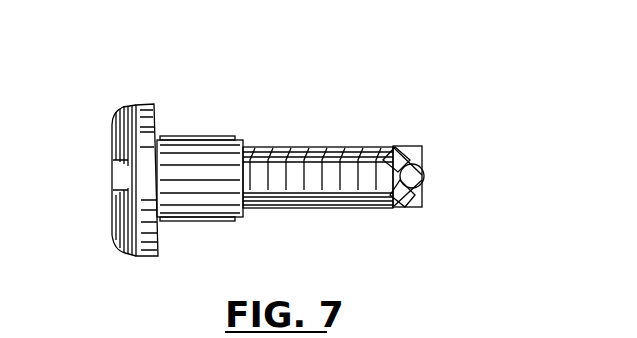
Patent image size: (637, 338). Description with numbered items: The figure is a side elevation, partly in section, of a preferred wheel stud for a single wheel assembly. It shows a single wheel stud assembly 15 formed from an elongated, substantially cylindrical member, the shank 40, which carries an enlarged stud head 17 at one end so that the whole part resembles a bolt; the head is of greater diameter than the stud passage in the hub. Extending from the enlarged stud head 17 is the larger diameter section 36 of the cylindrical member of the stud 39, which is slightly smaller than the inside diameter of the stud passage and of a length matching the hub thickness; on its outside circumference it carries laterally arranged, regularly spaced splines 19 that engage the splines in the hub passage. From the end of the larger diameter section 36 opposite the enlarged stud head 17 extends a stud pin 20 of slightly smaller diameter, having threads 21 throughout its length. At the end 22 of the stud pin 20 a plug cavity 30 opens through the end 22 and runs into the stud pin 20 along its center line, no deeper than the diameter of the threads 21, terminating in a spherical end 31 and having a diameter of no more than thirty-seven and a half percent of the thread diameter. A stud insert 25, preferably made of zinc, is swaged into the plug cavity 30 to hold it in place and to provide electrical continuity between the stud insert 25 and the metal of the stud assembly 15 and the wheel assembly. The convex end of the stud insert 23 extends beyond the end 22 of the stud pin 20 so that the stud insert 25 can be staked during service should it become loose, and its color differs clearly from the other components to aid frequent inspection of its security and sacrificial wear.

The single wheel stud assembly 15 is at (212, 76).
The enlarged stud head 17 is at (113, 160).
The splines 19 is at (197, 137).
The stud pin 20 is at (285, 143).
The threads 21 is at (320, 148).
The end of the stud pin 22 is at (427, 152).
The convex end of the stud insert 23 is at (432, 175).
The stud insert 25 is at (427, 180).
The plug cavity 30 is at (405, 145).
The spherical end 31 is at (390, 147).
The larger diameter section 36 is at (158, 218).
The stud 39 is at (140, 257).
The shank 40 is at (247, 137).